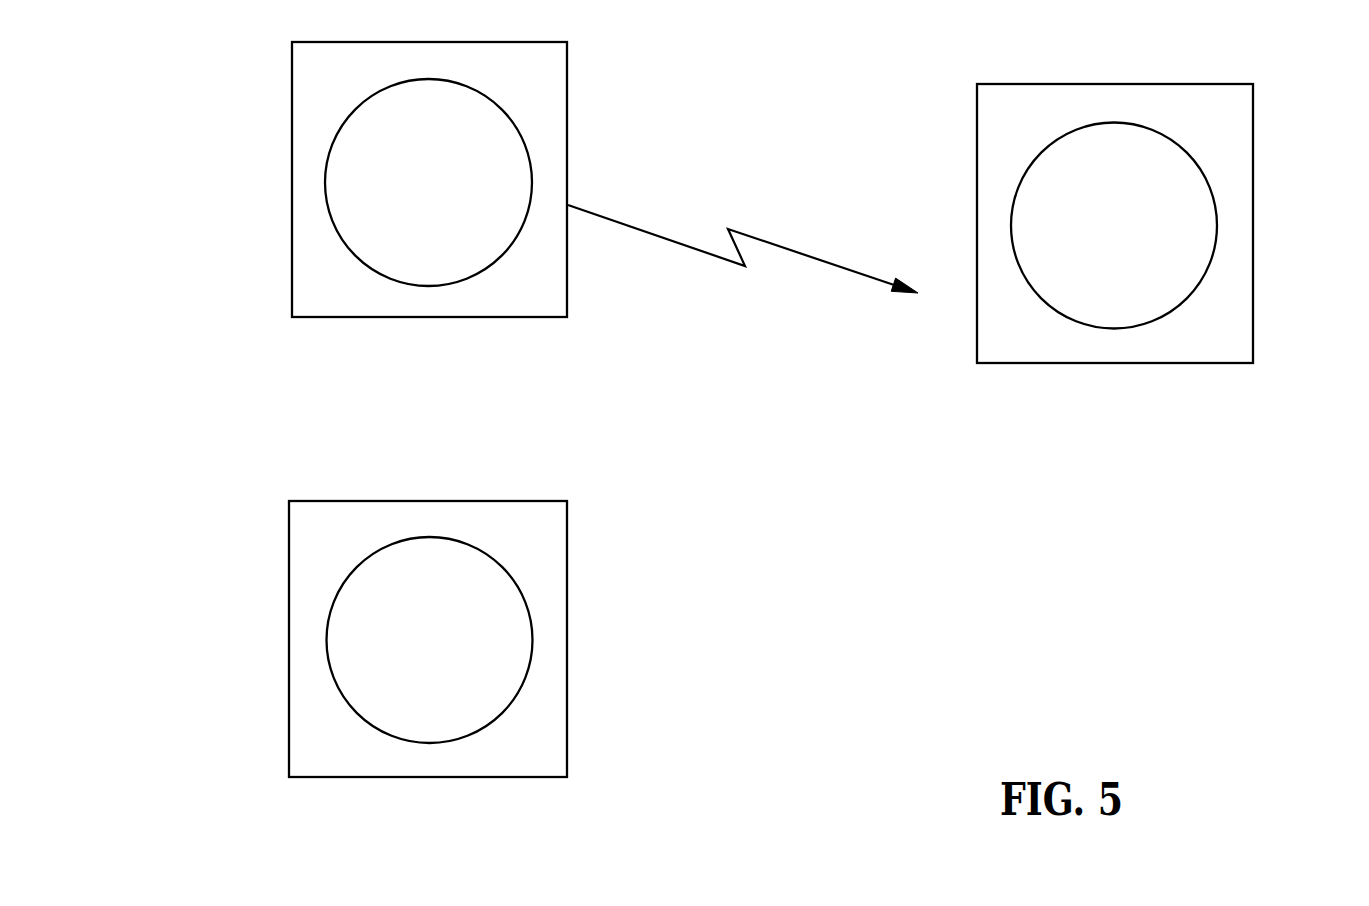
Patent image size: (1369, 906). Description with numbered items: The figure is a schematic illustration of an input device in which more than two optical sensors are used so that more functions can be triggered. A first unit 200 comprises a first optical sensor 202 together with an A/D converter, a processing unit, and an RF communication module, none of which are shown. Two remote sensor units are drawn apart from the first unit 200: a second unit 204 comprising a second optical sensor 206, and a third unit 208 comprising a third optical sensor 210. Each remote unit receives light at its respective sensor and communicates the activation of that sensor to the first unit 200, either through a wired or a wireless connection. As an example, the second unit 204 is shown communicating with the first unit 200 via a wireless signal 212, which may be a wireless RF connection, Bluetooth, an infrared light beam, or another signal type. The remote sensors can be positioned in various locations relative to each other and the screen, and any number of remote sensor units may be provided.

The first unit 200 is at (1206, 82).
The first optical sensor 202 is at (1058, 140).
The second unit 204 is at (292, 213).
The second optical sensor 206 is at (355, 112).
The third unit 208 is at (567, 726).
The third optical sensor 210 is at (345, 578).
The wireless signal 212 is at (609, 215).